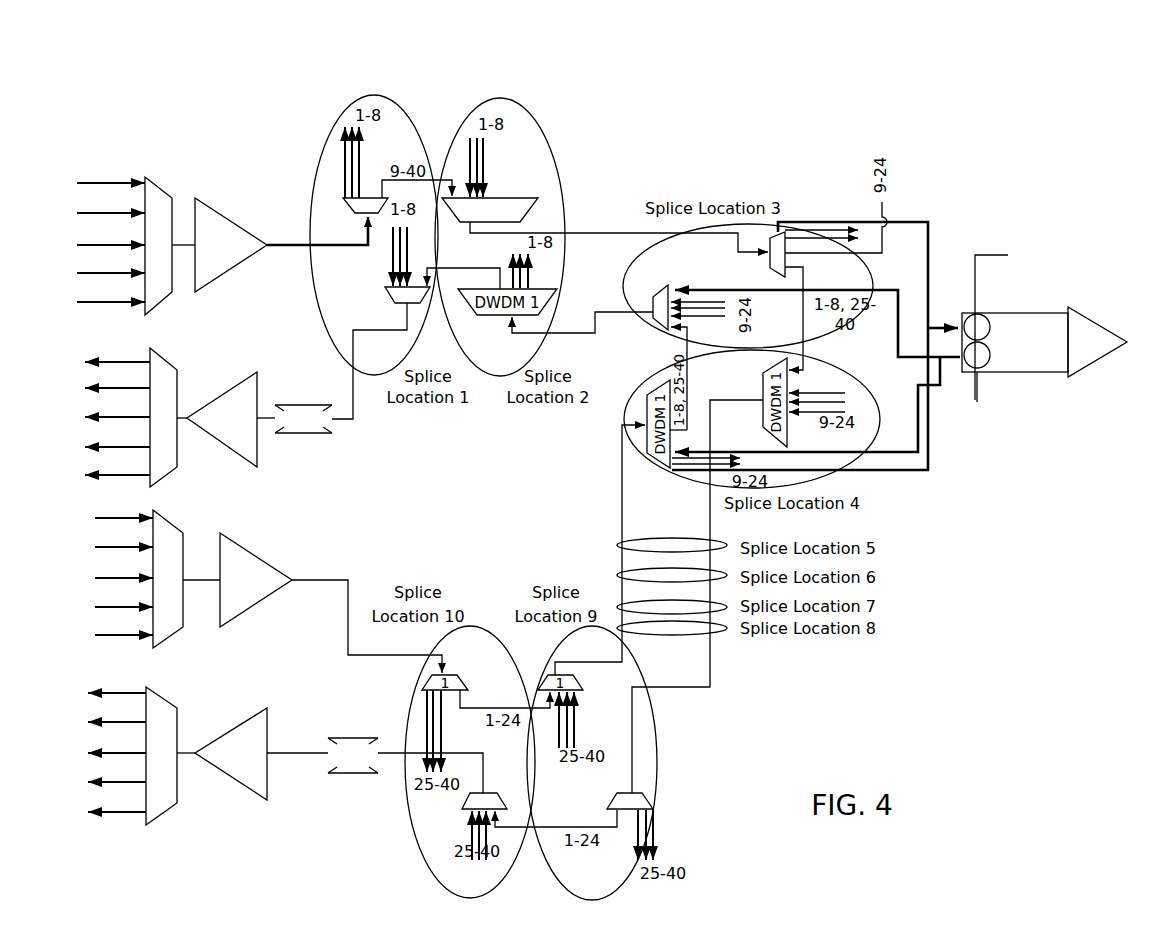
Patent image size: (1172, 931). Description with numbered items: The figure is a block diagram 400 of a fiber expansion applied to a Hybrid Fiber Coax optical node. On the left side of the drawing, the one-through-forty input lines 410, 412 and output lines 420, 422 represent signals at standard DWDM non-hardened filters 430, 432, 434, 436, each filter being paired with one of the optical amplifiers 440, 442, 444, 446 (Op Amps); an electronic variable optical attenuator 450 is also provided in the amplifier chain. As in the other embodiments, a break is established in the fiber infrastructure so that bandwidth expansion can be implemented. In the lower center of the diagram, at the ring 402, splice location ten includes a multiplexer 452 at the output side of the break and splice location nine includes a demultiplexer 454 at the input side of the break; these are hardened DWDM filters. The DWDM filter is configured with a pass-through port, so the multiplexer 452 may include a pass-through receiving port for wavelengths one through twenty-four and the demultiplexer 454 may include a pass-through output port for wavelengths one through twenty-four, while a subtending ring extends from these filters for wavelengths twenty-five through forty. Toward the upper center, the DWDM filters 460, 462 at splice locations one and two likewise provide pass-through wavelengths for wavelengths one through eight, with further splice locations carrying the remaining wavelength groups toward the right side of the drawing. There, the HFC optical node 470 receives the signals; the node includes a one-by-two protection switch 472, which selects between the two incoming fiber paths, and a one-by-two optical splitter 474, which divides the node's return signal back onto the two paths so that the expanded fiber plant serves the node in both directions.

The block diagram 400 is at (148, 95).
The ring 402 is at (383, 695).
The 1-40 input line 410 is at (62, 212).
The 1-40 input line 412 is at (77, 547).
The 1-40 output line 420 is at (67, 380).
The 1-40 output line 422 is at (75, 725).
The standard DWDM non-hardened filter 430 is at (158, 187).
The standard DWDM non-hardened filter 432 is at (165, 358).
The standard DWDM non-hardened filter 434 is at (168, 640).
The standard DWDM non-hardened filter 436 is at (163, 813).
The optical amplifier 440 is at (225, 272).
The optical amplifier 442 is at (223, 443).
The optical amplifier 444 is at (278, 562).
The optical amplifier 446 is at (208, 765).
The electronic variable optical attenuator 450 is at (352, 738).
The multiplexer 452 is at (500, 810).
The demultiplexer 454 is at (650, 800).
The DWDM filter 460 is at (343, 200).
The DWDM filter 462 is at (530, 198).
The HFC optical node 470 is at (1013, 312).
The 1×2 protection switch 472 is at (982, 180).
The 1×2 optical splitter 474 is at (982, 427).